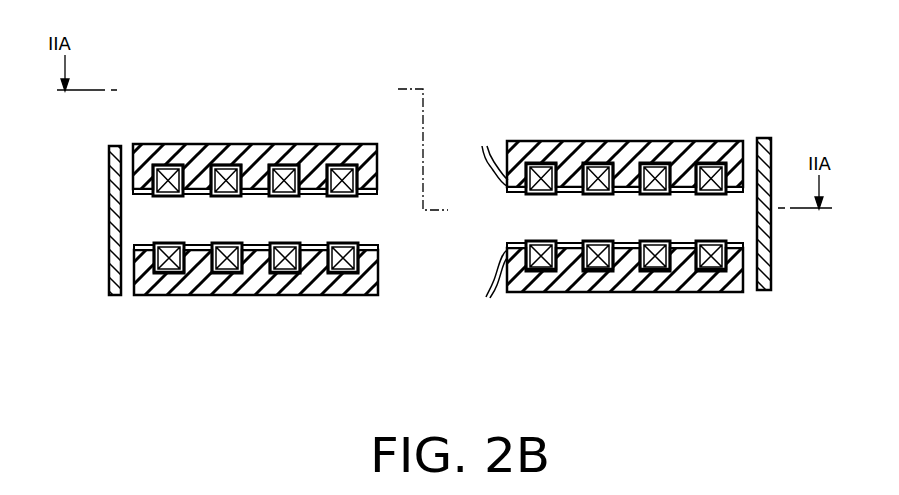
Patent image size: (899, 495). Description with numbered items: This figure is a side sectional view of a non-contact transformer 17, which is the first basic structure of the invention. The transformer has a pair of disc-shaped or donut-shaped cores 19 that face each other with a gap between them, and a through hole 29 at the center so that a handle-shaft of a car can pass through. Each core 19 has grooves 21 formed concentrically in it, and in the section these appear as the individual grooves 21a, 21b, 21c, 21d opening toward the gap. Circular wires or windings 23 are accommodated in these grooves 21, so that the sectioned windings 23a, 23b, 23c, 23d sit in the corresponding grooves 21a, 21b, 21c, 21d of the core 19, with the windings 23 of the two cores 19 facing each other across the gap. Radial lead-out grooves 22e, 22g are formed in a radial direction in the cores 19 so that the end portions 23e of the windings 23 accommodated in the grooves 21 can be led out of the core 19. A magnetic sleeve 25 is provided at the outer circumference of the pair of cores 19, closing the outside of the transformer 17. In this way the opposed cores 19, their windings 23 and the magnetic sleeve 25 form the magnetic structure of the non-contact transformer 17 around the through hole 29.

The non-contact transformer 17 is at (487, 75).
The core 19 is at (155, 144).
The grooves 21 is at (334, 244).
The groove 21a is at (541, 272).
The groove 21b is at (597, 272).
The groove 21c is at (653, 272).
The groove 21d is at (707, 272).
The lead-out groove 22e is at (683, 186).
The lead-out groove 22g is at (365, 244).
The windings 23 is at (342, 168).
The winding 23a is at (541, 250).
The winding 23b is at (597, 250).
The winding 23c is at (654, 250).
The winding 23d is at (710, 250).
The end portions of windings 23e is at (484, 160).
The magnetic sleeve 25 is at (108, 243).
The through hole 29 is at (457, 133).